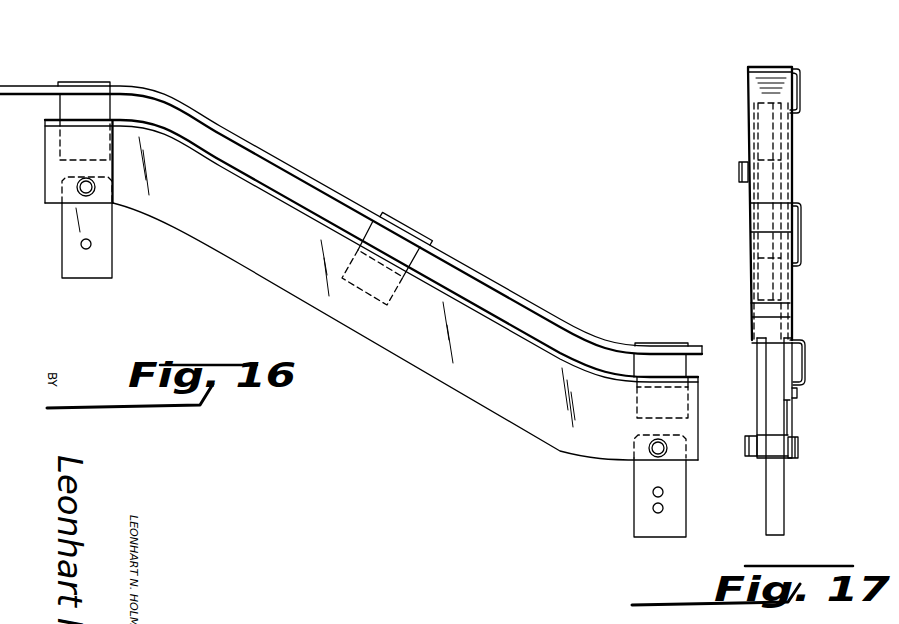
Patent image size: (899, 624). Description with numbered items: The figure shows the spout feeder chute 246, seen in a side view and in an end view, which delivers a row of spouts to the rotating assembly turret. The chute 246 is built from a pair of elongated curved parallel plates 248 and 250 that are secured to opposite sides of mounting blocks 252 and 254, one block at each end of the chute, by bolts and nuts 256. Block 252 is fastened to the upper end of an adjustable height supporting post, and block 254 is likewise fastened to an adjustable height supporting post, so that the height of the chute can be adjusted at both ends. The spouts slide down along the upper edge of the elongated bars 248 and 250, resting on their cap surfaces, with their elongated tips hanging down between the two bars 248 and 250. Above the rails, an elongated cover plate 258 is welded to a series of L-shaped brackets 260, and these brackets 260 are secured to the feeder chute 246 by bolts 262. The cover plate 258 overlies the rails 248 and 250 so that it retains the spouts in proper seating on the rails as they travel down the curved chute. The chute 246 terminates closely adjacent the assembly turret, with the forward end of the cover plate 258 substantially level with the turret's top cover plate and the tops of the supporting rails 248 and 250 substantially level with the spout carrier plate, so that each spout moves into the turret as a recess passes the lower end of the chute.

In FIG. 16, the spout feeder chute 246 is at (426, 378).
In FIG. 16, the elongated curved parallel plate 248 is at (708, 392).
In FIG. 17, the elongated curved parallel plate 248 is at (757, 388).
In FIG. 17, the elongated curved parallel plate 250 is at (787, 423).
In FIG. 16, the mounting block 252 is at (82, 268).
In FIG. 16, the mounting block 254 is at (672, 530).
In FIG. 17, the mounting block 254 is at (766, 512).
In FIG. 16, the bolts and nuts 256 is at (80, 197).
In FIG. 17, the bolts and nuts 256 is at (739, 168).
In FIG. 16, the elongated cover plate 258 is at (708, 355).
In FIG. 17, the elongated cover plate 258 is at (790, 168).
In FIG. 16, the L-shaped bracket 260 is at (97, 82).
In FIG. 17, the L-shaped bracket 260 is at (798, 90).
In FIG. 16, the bolt 262 is at (98, 112).
In FIG. 17, the bolt 262 is at (797, 392).